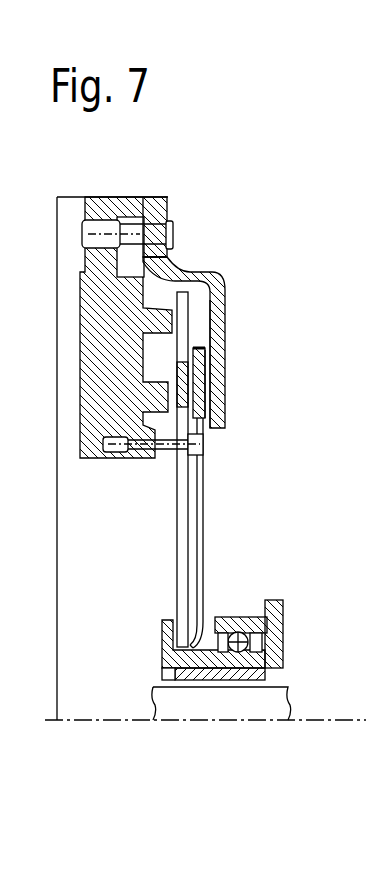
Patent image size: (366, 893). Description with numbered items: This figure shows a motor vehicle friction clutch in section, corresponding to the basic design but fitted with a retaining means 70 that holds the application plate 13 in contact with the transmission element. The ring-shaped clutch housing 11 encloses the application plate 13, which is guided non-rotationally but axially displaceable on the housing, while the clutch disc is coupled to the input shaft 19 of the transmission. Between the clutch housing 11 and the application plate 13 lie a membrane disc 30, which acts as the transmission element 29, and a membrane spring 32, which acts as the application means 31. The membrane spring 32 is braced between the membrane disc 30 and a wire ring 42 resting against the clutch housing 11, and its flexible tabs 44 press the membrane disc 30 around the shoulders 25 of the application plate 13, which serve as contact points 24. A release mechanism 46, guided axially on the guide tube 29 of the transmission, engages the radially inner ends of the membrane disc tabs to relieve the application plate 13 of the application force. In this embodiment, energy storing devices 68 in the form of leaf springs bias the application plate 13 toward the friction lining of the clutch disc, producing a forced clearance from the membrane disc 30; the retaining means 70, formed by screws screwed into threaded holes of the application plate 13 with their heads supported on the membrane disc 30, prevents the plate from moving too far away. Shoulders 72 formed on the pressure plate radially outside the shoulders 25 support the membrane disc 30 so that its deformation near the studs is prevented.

The clutch housing 11 is at (167, 205).
The application plate 13 is at (105, 287).
The input shaft 19 is at (290, 707).
The contact points 24 is at (190, 390).
The shoulders 25 is at (172, 398).
The guide tube 29 is at (198, 312).
The membrane disc 30 is at (180, 300).
The application means 31 is at (203, 527).
The membrane spring 32 is at (197, 495).
The wire ring 42 is at (207, 358).
The flexible tabs 44 is at (200, 567).
The release mechanism 46 is at (282, 603).
The energy storing devices 68 is at (143, 228).
The retaining means 70 is at (203, 445).
The shoulders 72 is at (160, 322).